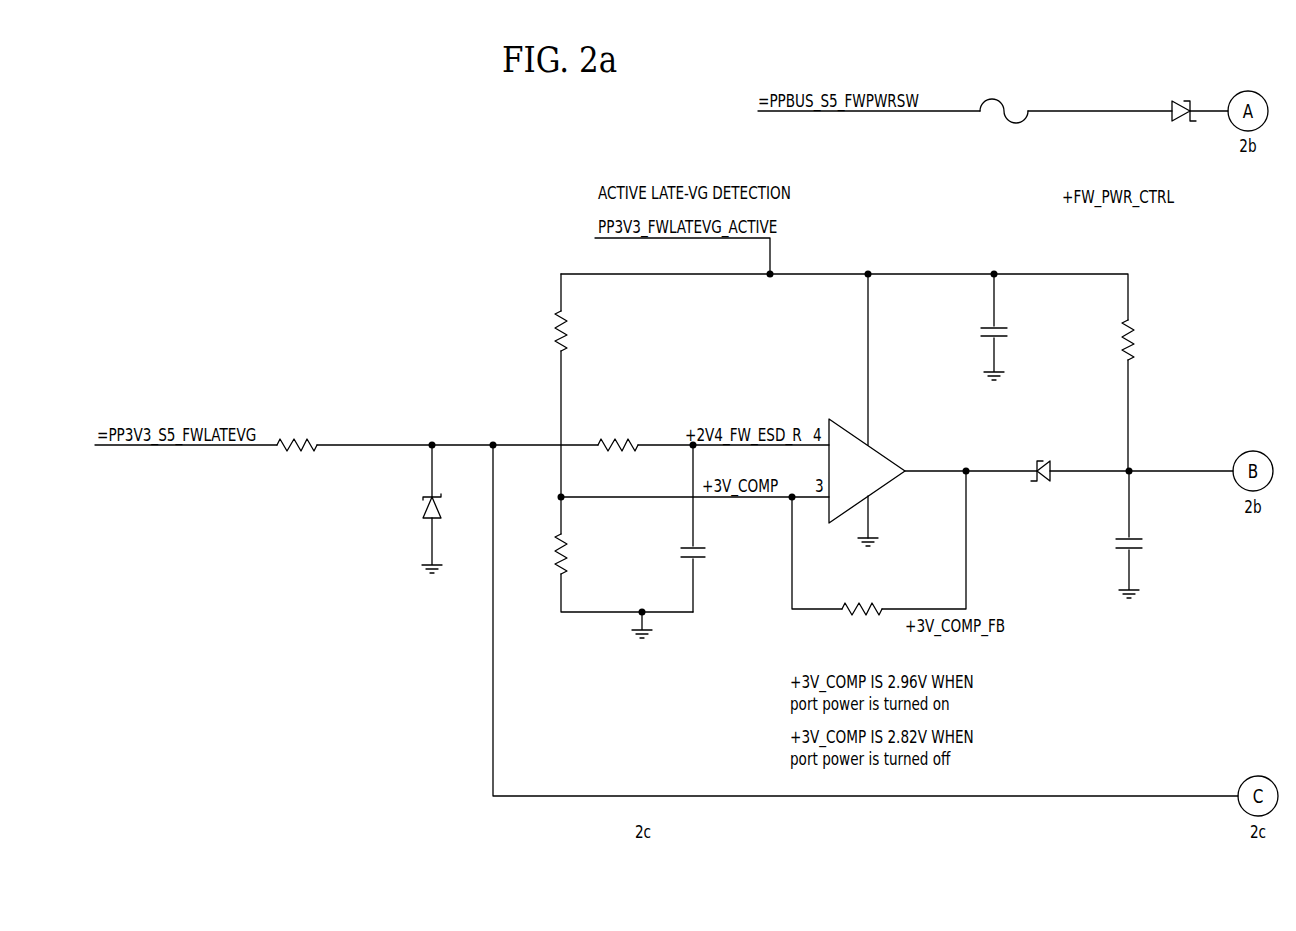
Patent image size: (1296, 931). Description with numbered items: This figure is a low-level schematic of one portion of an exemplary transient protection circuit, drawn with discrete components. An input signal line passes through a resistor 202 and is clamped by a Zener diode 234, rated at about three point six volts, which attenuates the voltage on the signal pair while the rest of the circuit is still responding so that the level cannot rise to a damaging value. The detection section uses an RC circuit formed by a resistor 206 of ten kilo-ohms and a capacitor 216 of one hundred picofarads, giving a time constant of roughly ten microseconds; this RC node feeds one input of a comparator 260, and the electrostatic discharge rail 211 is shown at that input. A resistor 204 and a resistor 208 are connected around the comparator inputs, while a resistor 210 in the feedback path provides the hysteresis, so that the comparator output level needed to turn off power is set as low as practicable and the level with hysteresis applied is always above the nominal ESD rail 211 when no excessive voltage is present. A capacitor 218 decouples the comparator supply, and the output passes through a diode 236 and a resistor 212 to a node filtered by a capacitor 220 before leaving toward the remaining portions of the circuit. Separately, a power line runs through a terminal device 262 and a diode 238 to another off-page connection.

The resistor 202 is at (275, 455).
The resistor 204 is at (620, 335).
The resistor 206 is at (645, 415).
The resistor 208 is at (625, 562).
The resistor 210 is at (885, 587).
The electrostatic discharge rail 211 is at (772, 403).
The resistor 212 is at (1190, 343).
The capacitor 216 is at (712, 583).
The capacitor 218 is at (985, 322).
The capacitor 220 is at (1115, 560).
The Zener diode 234 is at (418, 527).
The diode 236 is at (1041, 512).
The diode 238 is at (1153, 85).
The comparator 260 is at (890, 487).
The terminal device 262 is at (972, 122).